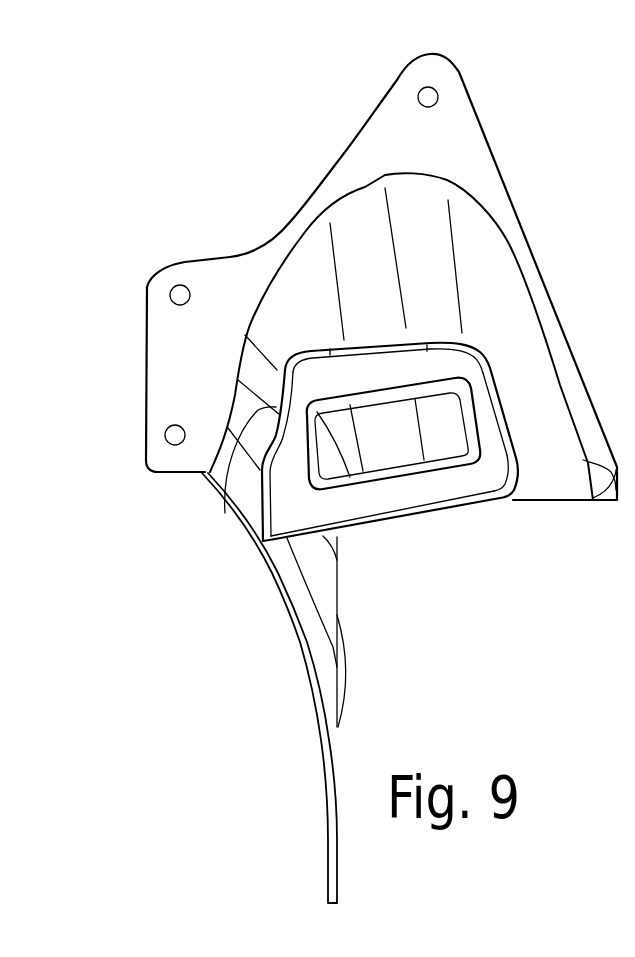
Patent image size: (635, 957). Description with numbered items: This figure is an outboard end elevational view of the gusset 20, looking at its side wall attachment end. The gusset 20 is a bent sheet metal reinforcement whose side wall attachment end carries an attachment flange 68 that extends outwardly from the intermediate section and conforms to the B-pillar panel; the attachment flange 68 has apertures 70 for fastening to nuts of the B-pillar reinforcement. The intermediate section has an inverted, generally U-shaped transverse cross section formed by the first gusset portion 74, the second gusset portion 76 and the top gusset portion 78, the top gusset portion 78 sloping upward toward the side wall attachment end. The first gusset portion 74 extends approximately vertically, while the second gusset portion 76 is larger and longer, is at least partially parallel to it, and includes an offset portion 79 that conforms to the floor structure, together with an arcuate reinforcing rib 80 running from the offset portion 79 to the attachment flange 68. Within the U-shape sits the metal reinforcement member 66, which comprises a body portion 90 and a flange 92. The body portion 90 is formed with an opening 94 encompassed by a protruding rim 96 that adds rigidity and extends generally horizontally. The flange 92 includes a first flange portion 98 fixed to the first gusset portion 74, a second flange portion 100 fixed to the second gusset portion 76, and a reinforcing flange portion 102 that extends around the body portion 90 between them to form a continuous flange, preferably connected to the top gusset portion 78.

The gusset 20 is at (235, 172).
The attachment flange 68 is at (478, 156).
The apertures 70 is at (434, 89).
The top gusset portion 78 is at (420, 288).
The reinforcing flange portion 102 is at (367, 343).
The first gusset portion 74 is at (557, 455).
The reinforcement member 66 is at (458, 510).
The body portion 90 is at (393, 495).
The first flange portion 98 is at (503, 413).
The protruding rim 96 is at (492, 503).
The second flange portion 100 is at (262, 477).
The opening 94 is at (389, 468).
The flange 92 is at (254, 518).
The reinforcing rib 80 is at (222, 480).
The offset portion 79 is at (350, 647).
The second gusset portion 76 is at (317, 747).